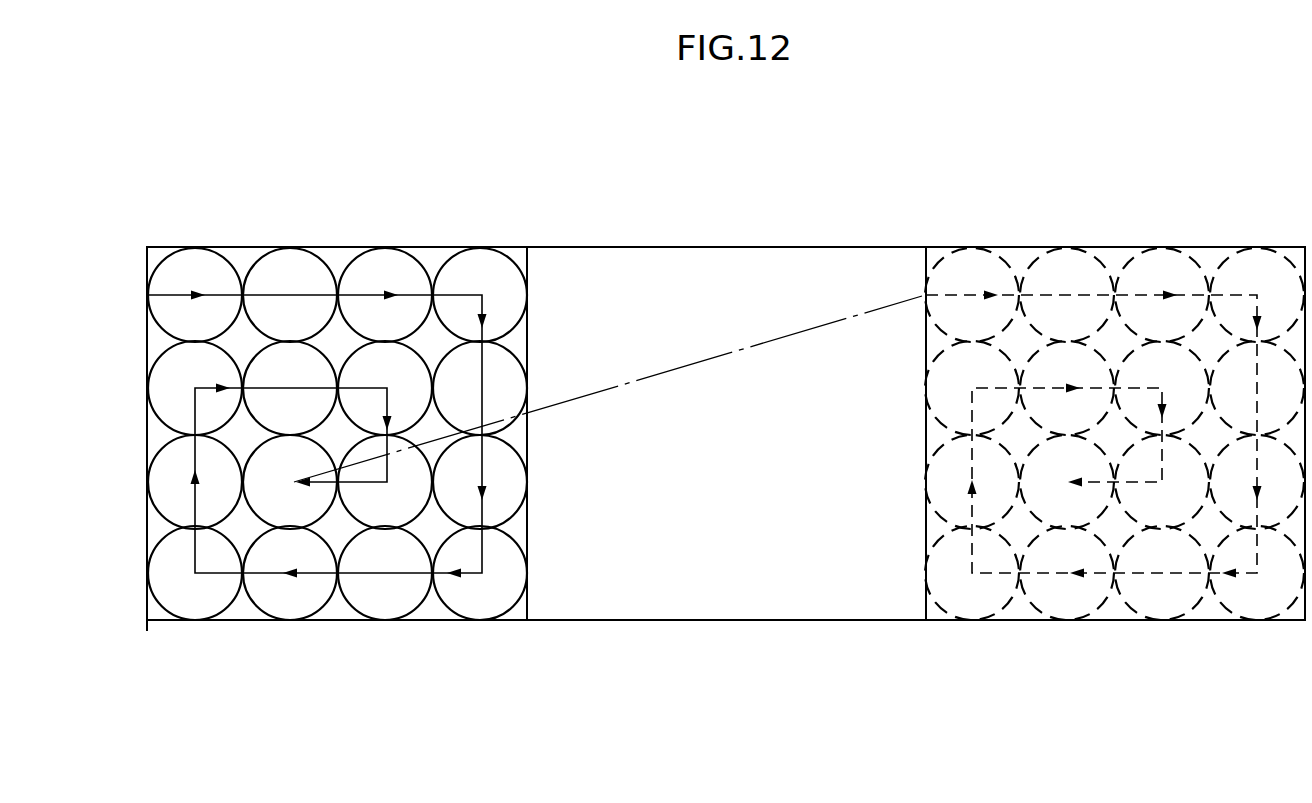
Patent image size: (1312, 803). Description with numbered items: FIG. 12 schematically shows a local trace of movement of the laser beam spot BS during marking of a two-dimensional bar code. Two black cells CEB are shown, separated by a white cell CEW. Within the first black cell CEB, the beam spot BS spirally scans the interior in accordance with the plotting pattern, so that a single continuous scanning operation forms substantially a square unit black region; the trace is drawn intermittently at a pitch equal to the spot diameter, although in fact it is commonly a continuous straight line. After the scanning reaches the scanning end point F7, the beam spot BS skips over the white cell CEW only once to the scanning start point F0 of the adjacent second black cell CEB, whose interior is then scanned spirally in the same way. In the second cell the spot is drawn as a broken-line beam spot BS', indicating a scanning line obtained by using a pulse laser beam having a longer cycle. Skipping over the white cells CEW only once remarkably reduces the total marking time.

The scanning start point F0 is at (924, 295).
The scanning end point F7 is at (1068, 483).
The beam spot BS is at (337, 392).
The beam spot BS' is at (1114, 388).
The black cell CEB is at (437, 250).
The white cell CEW is at (733, 272).